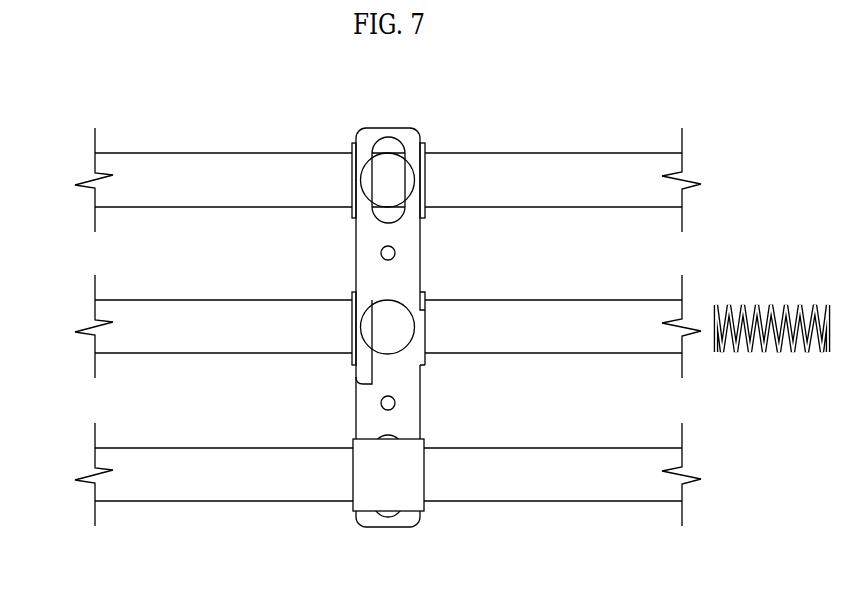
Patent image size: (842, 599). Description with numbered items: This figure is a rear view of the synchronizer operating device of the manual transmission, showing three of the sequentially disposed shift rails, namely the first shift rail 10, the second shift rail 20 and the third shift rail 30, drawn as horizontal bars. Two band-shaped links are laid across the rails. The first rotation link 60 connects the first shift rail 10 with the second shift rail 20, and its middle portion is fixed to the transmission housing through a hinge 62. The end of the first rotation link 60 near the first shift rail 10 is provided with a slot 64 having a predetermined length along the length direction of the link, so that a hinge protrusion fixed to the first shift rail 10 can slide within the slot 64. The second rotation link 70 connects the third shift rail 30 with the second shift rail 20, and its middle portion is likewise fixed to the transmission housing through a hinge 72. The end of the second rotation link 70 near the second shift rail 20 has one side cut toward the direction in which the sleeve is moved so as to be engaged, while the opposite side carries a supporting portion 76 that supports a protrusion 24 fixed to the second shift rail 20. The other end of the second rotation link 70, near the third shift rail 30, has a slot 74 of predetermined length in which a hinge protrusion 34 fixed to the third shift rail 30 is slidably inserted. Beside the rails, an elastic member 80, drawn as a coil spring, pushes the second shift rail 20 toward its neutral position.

The first shift rail 10 is at (207, 455).
The second shift rail 20 is at (207, 307).
The third shift rail 30 is at (207, 160).
The protrusion 24 is at (408, 327).
The hinge protrusion 34 is at (405, 174).
The first rotation link 60 is at (406, 474).
The hinge 62 is at (381, 403).
The slot 64 is at (388, 519).
The second rotation link 70 is at (393, 236).
The hinge 72 is at (381, 253).
The slot 74 is at (388, 137).
The supporting portion 76 is at (362, 372).
The elastic member 80 is at (800, 305).